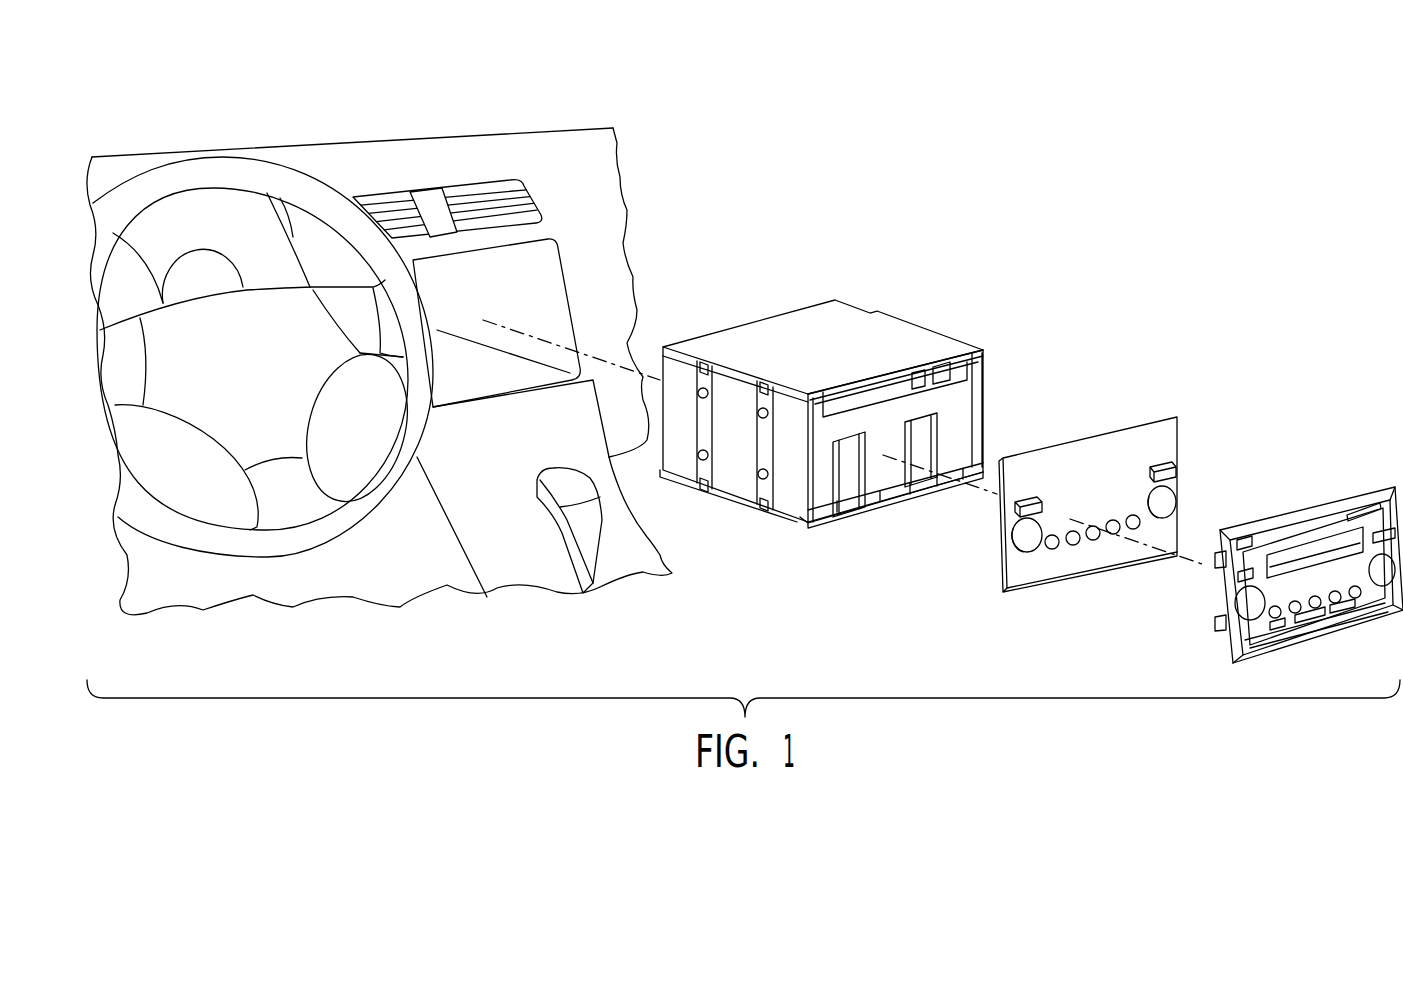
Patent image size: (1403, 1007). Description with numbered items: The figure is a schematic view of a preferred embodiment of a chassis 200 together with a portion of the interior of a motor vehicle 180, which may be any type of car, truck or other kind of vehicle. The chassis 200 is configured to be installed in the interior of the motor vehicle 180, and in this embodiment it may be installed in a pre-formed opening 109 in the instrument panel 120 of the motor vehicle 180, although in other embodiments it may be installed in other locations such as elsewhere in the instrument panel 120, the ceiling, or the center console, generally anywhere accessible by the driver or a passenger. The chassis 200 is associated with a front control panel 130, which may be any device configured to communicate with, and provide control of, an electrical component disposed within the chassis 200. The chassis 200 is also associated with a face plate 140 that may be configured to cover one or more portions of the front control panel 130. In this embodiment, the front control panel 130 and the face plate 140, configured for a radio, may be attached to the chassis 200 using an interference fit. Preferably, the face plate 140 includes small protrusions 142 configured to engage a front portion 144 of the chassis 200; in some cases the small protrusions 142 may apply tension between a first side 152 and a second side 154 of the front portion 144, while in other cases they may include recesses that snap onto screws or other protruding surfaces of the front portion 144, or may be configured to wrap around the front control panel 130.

The motor vehicle 180 is at (508, 130).
The pre-formed opening 109 is at (563, 260).
The instrument panel 120 is at (500, 445).
The chassis 200 is at (905, 320).
The second side 154 is at (985, 372).
The front portion 144 is at (993, 403).
The first side 152 is at (810, 488).
The front control panel 130 is at (1185, 433).
The face plate 140 is at (1352, 500).
The small protrusions 142 is at (1212, 623).